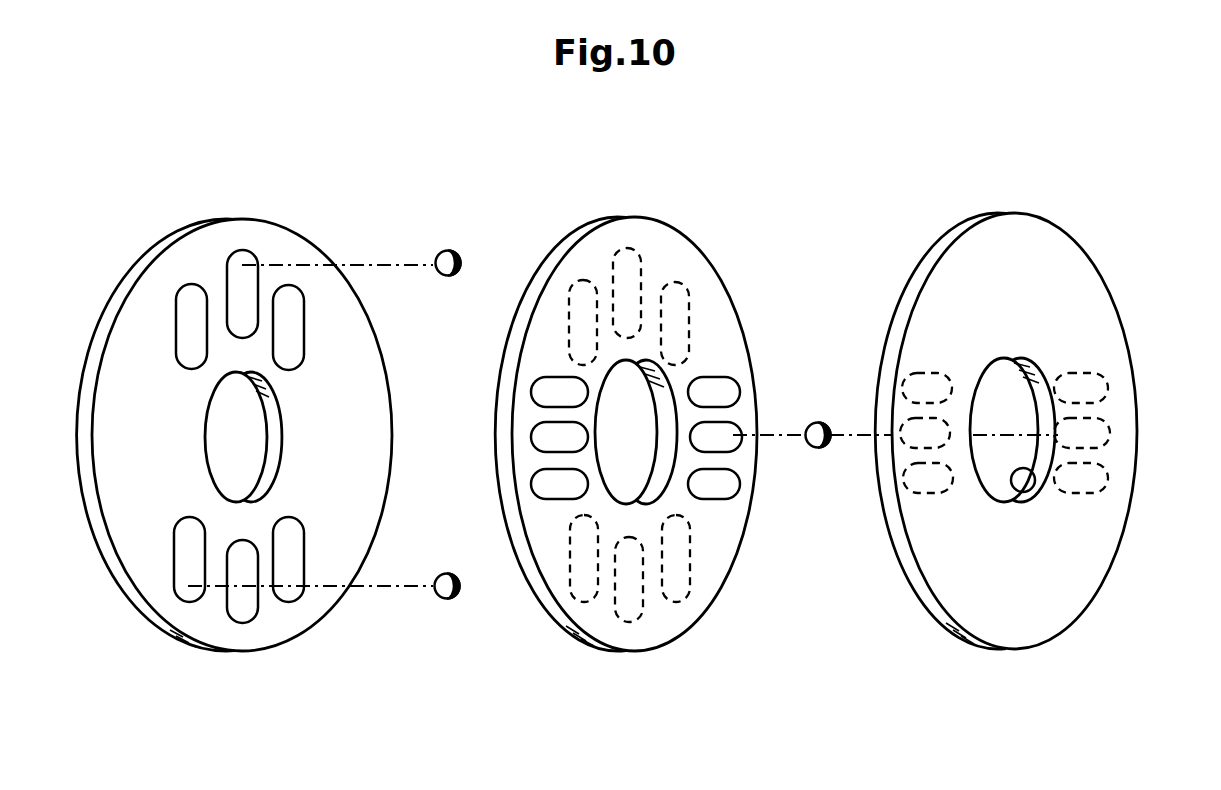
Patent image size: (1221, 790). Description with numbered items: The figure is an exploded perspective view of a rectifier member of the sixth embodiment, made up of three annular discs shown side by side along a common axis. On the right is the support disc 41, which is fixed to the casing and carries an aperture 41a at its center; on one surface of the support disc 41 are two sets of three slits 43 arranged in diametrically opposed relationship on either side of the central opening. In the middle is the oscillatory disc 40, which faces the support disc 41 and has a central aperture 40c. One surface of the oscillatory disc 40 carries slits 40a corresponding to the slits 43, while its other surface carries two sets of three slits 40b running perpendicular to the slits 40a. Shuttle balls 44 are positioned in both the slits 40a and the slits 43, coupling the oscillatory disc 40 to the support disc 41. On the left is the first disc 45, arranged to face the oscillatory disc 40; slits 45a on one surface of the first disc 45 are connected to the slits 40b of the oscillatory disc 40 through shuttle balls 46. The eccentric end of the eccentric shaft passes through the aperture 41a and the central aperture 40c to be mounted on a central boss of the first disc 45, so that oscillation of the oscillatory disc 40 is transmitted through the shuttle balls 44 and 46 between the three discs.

The oscillatory disc 40 is at (690, 623).
The slits 40a is at (533, 400).
The slits 40b is at (590, 280).
The central aperture 40c is at (609, 476).
The support disc 41 is at (1058, 590).
The aperture 41a is at (1017, 502).
The slits 43 is at (902, 388).
The shuttle balls 44 is at (818, 423).
The first disc 45 is at (362, 403).
The slits 45a is at (287, 285).
The shuttle balls 46 is at (449, 250).